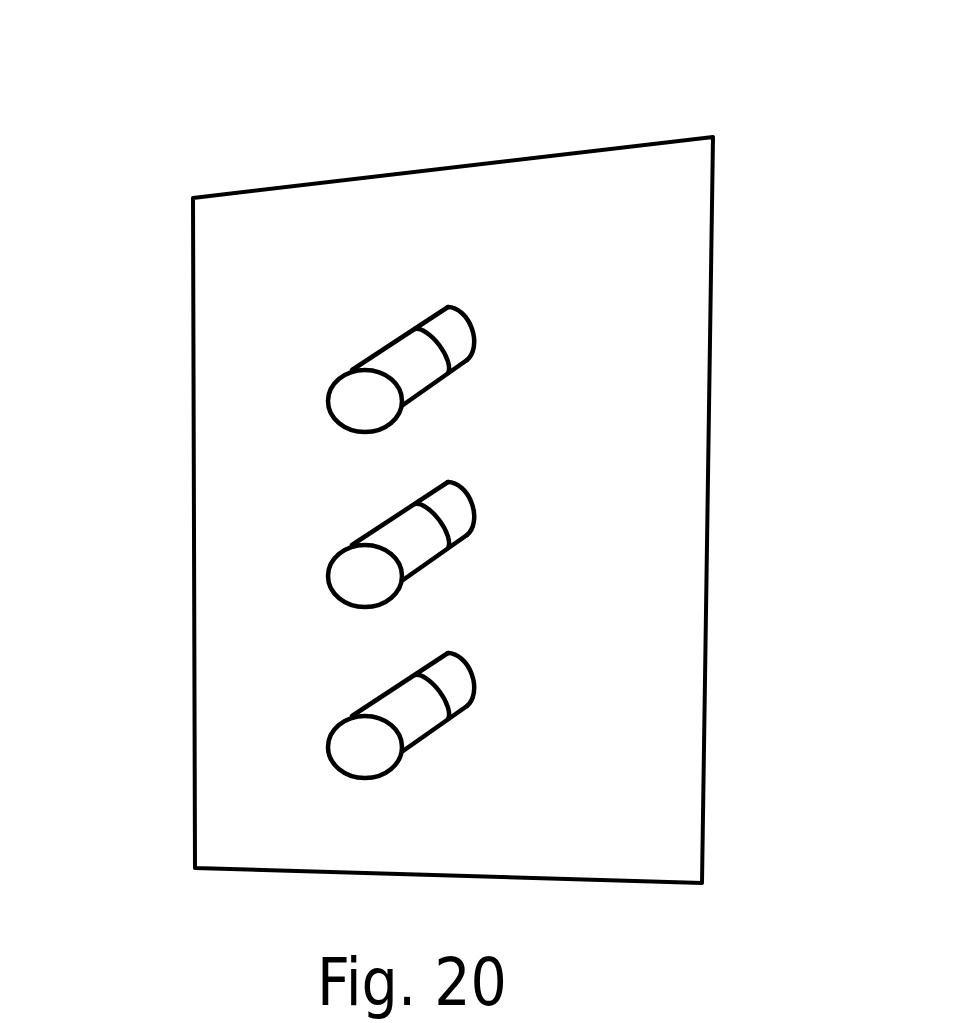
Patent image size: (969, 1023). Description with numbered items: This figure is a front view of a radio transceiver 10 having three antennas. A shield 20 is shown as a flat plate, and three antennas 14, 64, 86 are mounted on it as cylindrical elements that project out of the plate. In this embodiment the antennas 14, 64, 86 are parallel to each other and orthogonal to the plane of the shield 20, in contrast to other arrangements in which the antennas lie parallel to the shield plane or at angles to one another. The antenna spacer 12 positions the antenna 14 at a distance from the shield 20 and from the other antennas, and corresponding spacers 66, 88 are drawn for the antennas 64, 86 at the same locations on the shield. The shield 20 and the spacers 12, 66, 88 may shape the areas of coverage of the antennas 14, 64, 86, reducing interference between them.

The radio transceiver 10 is at (478, 122).
The shield 20 is at (193, 795).
The antenna spacer 12 is at (461, 364).
The antenna 14 is at (327, 403).
The second cylindrical member 66 is at (460, 540).
The antenna 64 is at (327, 579).
The third cylindrical member 88 is at (459, 711).
The antenna 86 is at (325, 750).